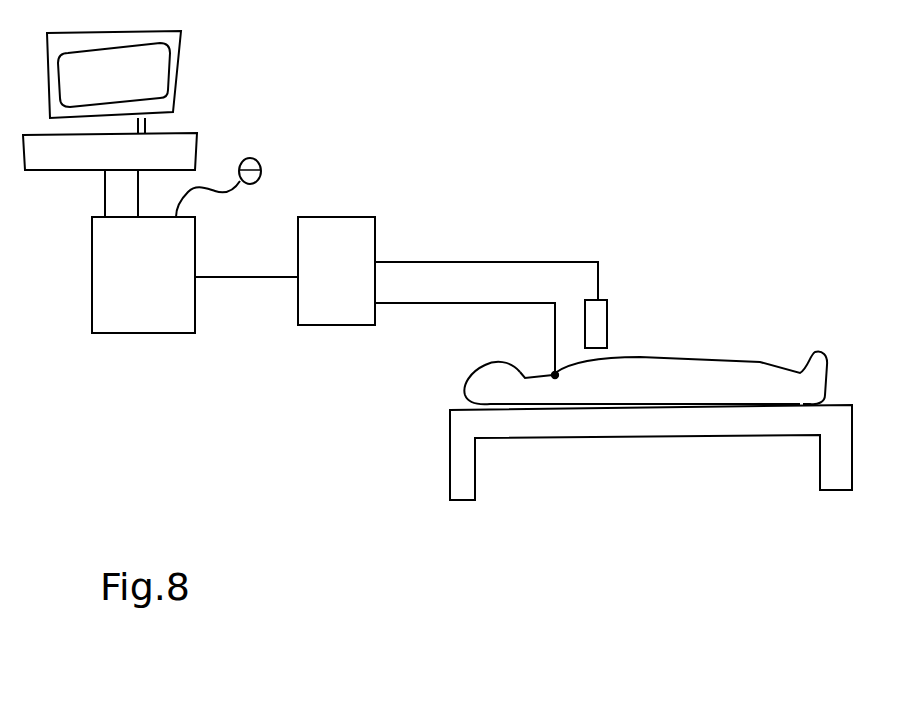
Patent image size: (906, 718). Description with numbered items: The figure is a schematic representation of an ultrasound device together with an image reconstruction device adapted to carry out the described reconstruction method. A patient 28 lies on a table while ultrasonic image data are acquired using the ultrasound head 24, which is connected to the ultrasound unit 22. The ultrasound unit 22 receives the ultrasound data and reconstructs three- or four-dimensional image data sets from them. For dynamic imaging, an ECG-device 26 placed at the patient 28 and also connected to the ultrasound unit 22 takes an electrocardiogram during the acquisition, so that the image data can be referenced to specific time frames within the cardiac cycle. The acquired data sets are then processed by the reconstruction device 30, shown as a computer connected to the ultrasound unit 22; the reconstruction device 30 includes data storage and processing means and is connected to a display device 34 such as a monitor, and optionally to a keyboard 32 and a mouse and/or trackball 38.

The ultrasound unit 22 is at (350, 283).
The ultrasound head 24 is at (608, 312).
The ECG-device 26 is at (553, 373).
The patient 28 is at (788, 343).
The reconstruction device 30 is at (162, 288).
The keyboard 32 is at (197, 150).
The display device 34 is at (182, 70).
The mouse and/or trackball 38 is at (261, 166).